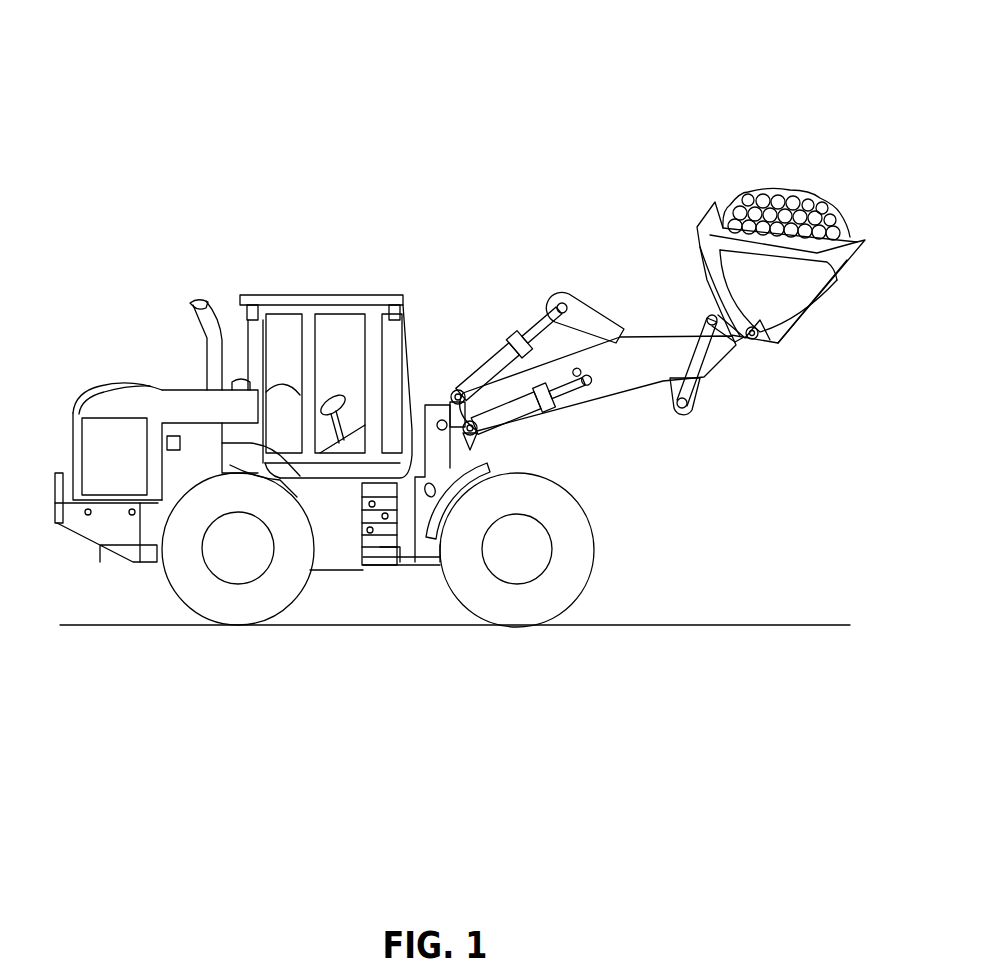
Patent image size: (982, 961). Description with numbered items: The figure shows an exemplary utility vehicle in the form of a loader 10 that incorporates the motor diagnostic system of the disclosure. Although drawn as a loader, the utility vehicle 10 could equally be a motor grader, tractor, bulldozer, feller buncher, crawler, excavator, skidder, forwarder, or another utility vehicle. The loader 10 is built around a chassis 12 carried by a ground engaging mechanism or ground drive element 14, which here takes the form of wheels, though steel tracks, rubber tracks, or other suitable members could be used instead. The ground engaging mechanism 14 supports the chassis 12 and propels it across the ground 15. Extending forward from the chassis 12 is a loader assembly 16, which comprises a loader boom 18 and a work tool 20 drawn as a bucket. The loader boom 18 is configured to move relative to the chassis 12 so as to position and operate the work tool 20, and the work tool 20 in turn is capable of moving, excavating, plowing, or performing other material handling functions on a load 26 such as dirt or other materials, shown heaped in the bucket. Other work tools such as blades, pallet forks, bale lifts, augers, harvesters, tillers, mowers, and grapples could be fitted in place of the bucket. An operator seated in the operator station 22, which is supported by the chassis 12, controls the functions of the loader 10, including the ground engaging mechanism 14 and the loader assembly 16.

The loader 10 is at (472, 143).
The chassis 12 is at (328, 553).
The ground engaging mechanism 14 is at (233, 608).
The ground 15 is at (748, 632).
The loader assembly 16 is at (696, 443).
The loader boom 18 is at (645, 353).
The work tool 20 is at (810, 287).
The operator station 22 is at (340, 332).
The load 26 is at (778, 201).